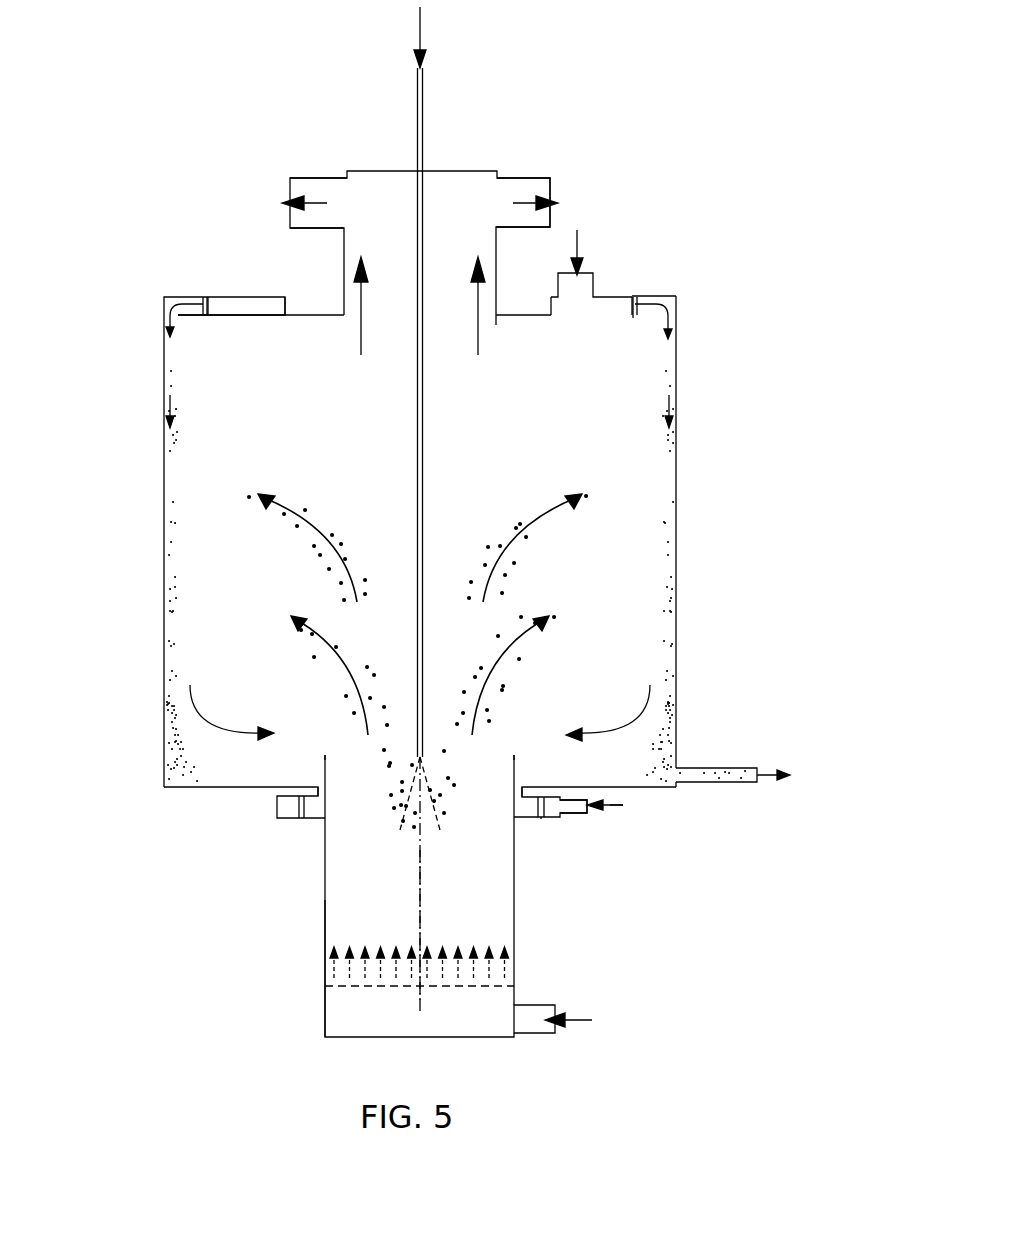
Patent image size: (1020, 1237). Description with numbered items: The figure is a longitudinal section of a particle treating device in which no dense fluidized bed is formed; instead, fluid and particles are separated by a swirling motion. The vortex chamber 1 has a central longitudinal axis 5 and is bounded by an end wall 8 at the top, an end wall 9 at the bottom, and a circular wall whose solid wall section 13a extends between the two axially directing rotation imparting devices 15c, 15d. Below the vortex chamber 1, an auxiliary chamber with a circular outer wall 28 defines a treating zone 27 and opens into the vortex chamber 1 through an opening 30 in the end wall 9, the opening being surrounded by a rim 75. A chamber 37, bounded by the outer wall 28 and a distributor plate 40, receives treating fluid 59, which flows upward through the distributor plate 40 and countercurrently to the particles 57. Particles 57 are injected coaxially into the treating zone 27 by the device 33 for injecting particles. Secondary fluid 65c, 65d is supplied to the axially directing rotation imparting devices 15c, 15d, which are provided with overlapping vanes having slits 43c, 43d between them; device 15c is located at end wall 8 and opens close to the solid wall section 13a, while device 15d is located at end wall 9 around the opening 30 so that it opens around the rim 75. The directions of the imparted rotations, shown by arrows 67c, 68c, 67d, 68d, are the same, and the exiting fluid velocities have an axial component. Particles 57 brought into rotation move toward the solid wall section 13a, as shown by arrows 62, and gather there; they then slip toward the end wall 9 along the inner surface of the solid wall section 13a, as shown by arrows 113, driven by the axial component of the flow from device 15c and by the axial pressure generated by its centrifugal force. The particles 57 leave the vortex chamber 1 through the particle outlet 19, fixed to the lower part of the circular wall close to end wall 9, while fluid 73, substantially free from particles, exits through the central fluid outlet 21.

The vortex chamber 1 is at (453, 527).
The central longitudinal axis 5 is at (421, 880).
The end wall 8 is at (313, 314).
The end wall 9 is at (220, 788).
The solid wall section 13a is at (678, 524).
The axially directing rotation imparting device 15c is at (200, 293).
The axially directing rotation imparting device 15d is at (298, 824).
The particle outlet 19 is at (718, 768).
The central fluid outlet 21 is at (302, 176).
The treating zone 27 is at (359, 896).
The circular outer wall 28 is at (515, 920).
The opening 30 is at (514, 790).
The device for injecting particles 33 is at (417, 78).
The chamber 37 is at (322, 1008).
The distributor plate 40 is at (362, 987).
The slits 43c is at (633, 318).
The slits 43d is at (541, 819).
The particles 57 is at (423, 41).
The treating fluid 59 is at (330, 972).
The arrows indicating particle movement 62 is at (322, 540).
The secondary fluid 65c is at (580, 242).
The secondary fluid 65d is at (573, 806).
The arrow indicating imparted rotation direction 67c is at (678, 305).
The arrow indicating imparted rotation direction 67d is at (530, 770).
The arrow indicating imparted rotation direction 68c is at (162, 306).
The arrow indicating imparted rotation direction 68d is at (312, 770).
The fluid 73 is at (287, 202).
The rim 75 is at (325, 757).
The arrows indicating particle slip 113 is at (180, 412).